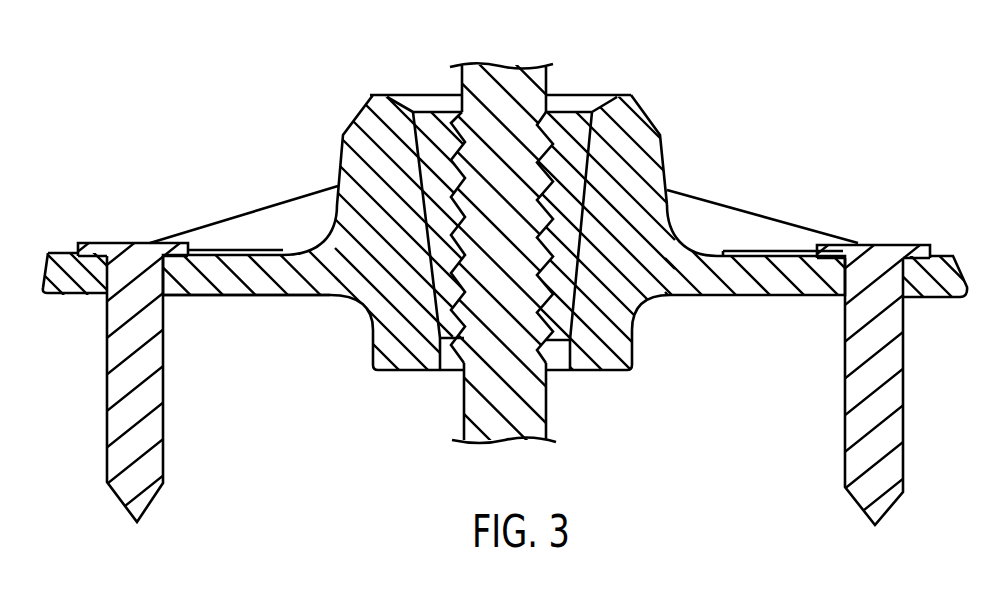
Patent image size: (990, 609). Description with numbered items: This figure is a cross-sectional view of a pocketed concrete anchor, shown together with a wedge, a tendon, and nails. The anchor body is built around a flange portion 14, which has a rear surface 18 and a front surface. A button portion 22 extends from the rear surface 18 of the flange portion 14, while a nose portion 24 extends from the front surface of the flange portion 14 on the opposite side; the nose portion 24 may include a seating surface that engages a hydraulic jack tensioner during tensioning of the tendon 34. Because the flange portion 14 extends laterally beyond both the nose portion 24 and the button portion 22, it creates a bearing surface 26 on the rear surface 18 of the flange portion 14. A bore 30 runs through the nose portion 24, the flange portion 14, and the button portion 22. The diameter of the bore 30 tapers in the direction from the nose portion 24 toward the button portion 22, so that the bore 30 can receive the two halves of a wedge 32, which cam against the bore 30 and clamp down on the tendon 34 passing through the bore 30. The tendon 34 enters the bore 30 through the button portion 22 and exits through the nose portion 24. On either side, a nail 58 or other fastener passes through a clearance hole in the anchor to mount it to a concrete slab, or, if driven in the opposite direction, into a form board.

The flange portion 14 is at (798, 274).
The rear surface 18 is at (758, 297).
The button portion 22 is at (403, 337).
The nose portion 24 is at (360, 158).
The bearing surface 26 is at (238, 297).
The bore 30 is at (415, 133).
The wedge 32 is at (570, 132).
The tendon 34 is at (520, 408).
The nail 58 is at (122, 380).